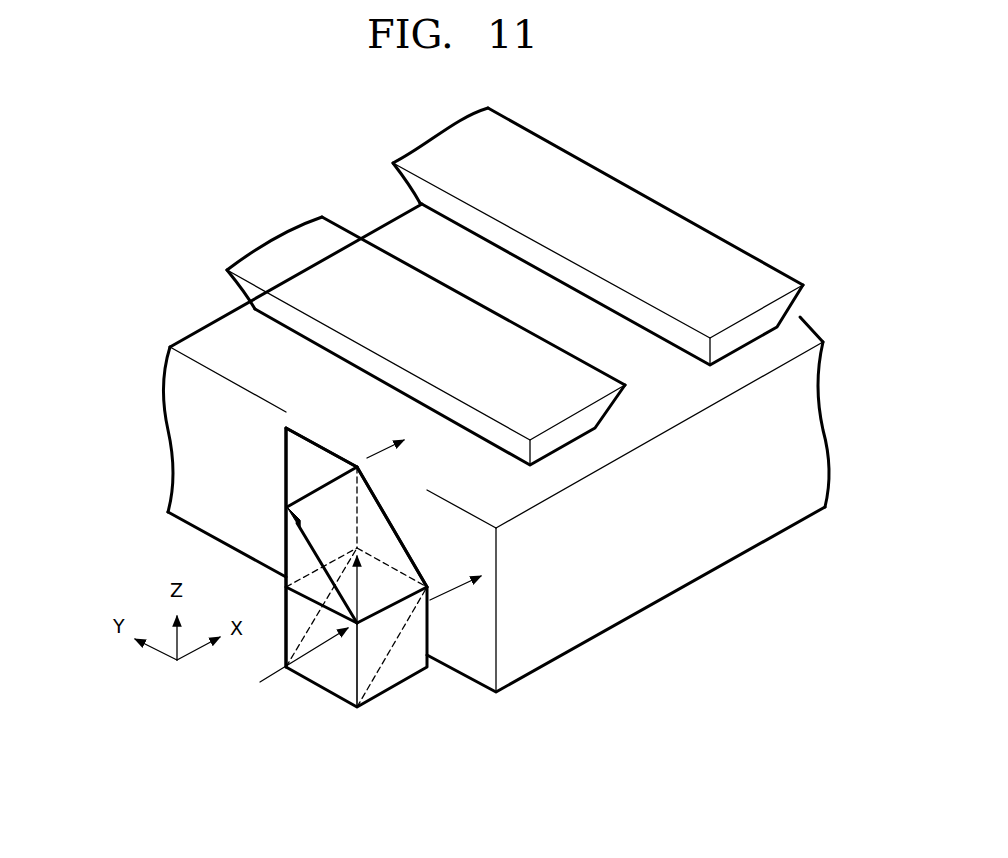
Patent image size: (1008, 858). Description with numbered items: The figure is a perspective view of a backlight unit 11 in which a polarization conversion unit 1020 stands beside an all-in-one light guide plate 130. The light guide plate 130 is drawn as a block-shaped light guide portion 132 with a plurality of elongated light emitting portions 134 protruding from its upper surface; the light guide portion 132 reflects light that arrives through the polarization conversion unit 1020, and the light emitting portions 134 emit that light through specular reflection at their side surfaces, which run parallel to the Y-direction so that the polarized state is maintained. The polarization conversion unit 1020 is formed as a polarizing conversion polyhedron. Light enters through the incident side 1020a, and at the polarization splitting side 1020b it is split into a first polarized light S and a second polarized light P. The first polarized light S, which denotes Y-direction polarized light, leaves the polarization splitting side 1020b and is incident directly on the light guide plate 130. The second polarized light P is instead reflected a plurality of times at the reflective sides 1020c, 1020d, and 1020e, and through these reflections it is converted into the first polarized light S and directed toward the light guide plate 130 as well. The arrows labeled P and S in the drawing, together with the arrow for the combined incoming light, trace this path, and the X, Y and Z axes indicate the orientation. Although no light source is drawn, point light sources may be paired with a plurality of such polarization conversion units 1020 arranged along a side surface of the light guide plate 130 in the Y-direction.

The backlight unit 11 is at (706, 194).
The light guide plate 130 is at (230, 215).
The light guide portion 132 is at (218, 328).
The light emitting portions 134 is at (263, 273).
The polarization conversion unit 1020 is at (414, 696).
The incident side 1020a is at (318, 690).
The polarization splitting side 1020b is at (372, 663).
The reflective side 1020c is at (377, 528).
The reflective side 1020d is at (283, 465).
The reflective side 1020e is at (325, 446).